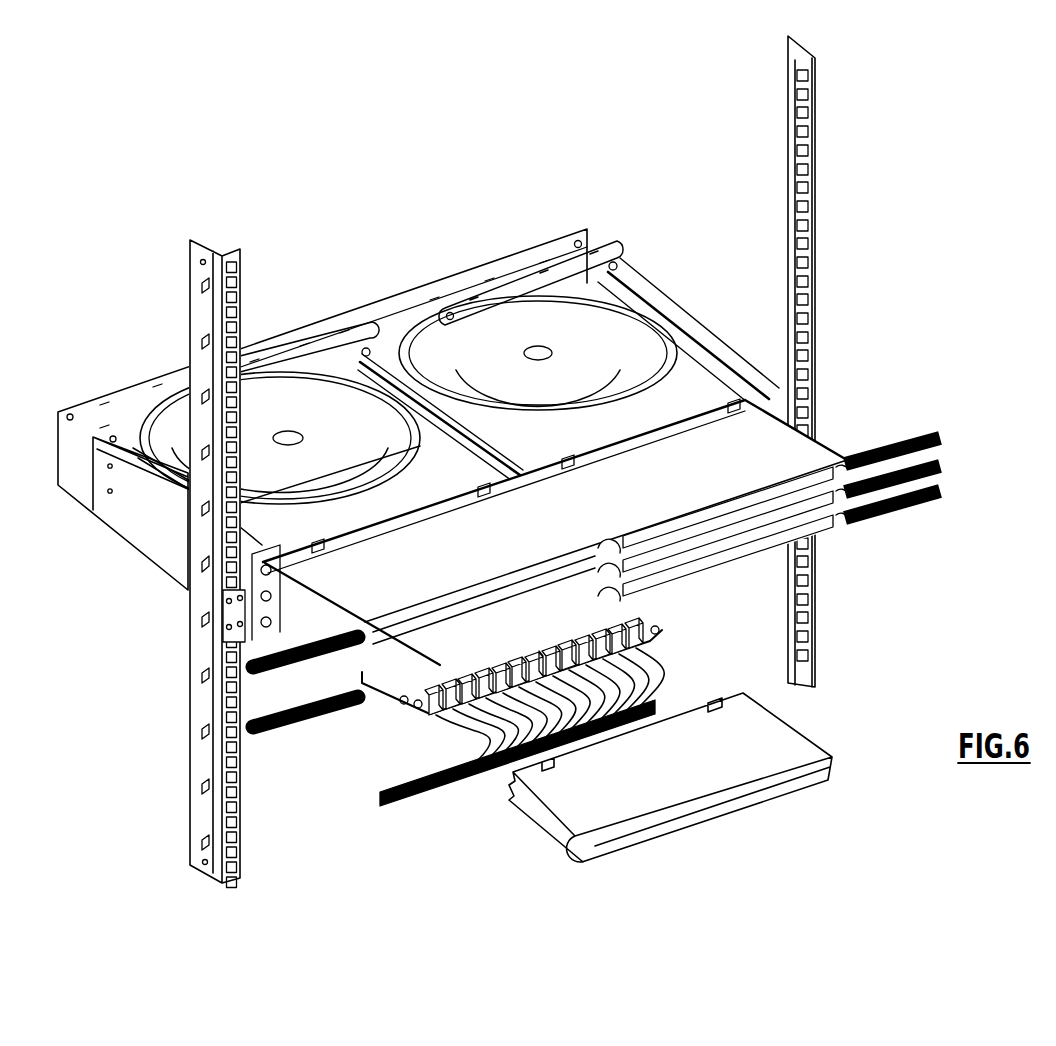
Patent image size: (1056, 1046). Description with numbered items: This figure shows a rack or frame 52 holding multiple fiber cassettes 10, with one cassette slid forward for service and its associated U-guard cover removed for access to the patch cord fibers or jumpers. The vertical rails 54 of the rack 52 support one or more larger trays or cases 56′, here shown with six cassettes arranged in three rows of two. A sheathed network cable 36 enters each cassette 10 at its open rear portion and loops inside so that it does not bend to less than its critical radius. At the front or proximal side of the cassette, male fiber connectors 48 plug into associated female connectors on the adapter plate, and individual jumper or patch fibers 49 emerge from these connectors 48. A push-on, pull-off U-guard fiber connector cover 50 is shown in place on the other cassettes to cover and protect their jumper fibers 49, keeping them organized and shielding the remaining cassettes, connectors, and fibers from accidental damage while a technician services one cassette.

The cassette 10 is at (362, 710).
The sheathed network cable 36 is at (331, 343).
The male fiber connectors 48 is at (648, 645).
The jumper fibers 49 is at (893, 444).
The U-guard fiber connector cover 50 is at (539, 834).
The rack 52 is at (497, 462).
The vertical rails 54 is at (818, 236).
The trays or cases 56′ is at (160, 553).